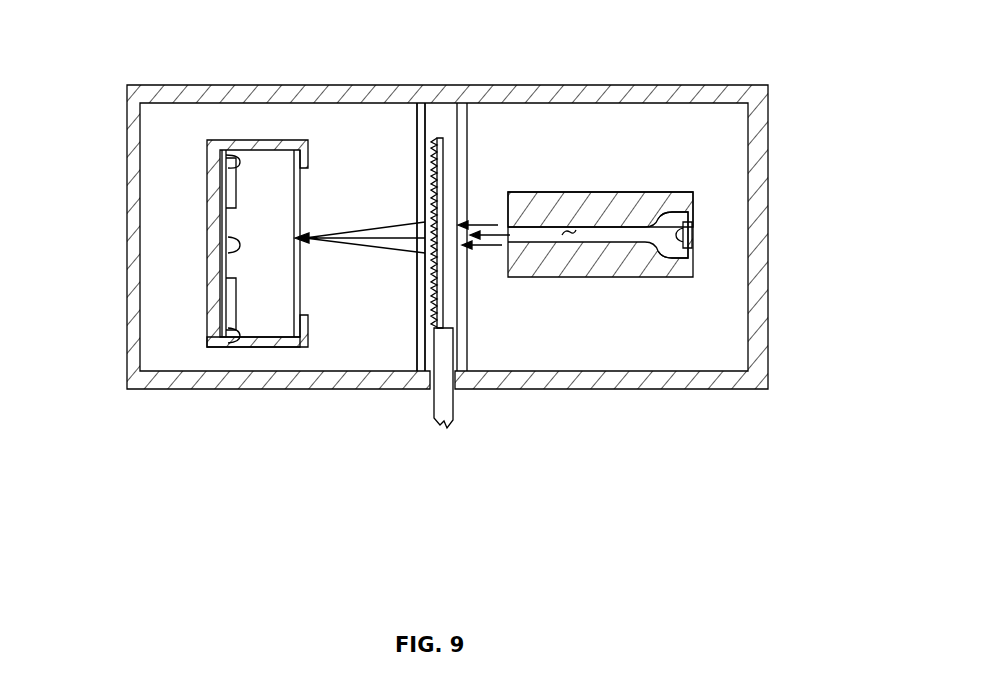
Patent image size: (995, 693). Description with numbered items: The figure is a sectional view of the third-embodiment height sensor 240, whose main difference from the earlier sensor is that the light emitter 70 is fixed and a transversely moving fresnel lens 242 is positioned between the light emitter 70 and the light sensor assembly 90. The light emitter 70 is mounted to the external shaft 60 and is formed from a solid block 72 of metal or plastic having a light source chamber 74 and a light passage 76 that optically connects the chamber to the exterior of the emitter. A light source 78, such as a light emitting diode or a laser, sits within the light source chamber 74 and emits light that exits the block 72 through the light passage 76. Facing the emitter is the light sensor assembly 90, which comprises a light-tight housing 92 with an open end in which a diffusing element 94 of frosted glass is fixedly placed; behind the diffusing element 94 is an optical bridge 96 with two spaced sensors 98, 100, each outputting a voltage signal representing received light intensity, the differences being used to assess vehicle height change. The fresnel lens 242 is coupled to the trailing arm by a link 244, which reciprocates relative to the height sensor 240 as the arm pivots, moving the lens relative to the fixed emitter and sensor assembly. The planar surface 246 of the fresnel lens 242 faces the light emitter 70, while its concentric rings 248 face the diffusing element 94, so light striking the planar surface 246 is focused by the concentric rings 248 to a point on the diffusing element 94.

The height sensor 240 is at (827, 44).
The external shaft 60 is at (633, 142).
The light emitter 70 is at (558, 190).
The solid block 72 is at (570, 200).
The light source chamber 74 is at (688, 262).
The light passage 76 is at (568, 236).
The light source 78 is at (695, 230).
The light sensor assembly 90 is at (283, 347).
The light-tight housing 92 is at (258, 344).
The diffusing element 94 is at (305, 292).
The optical bridge 96 is at (236, 250).
The sensor 98 is at (225, 150).
The sensor 100 is at (244, 336).
The fresnel lens 242 is at (462, 266).
The link 244 is at (445, 422).
The planar surface 246 is at (467, 148).
The concentric rings 248 is at (417, 148).